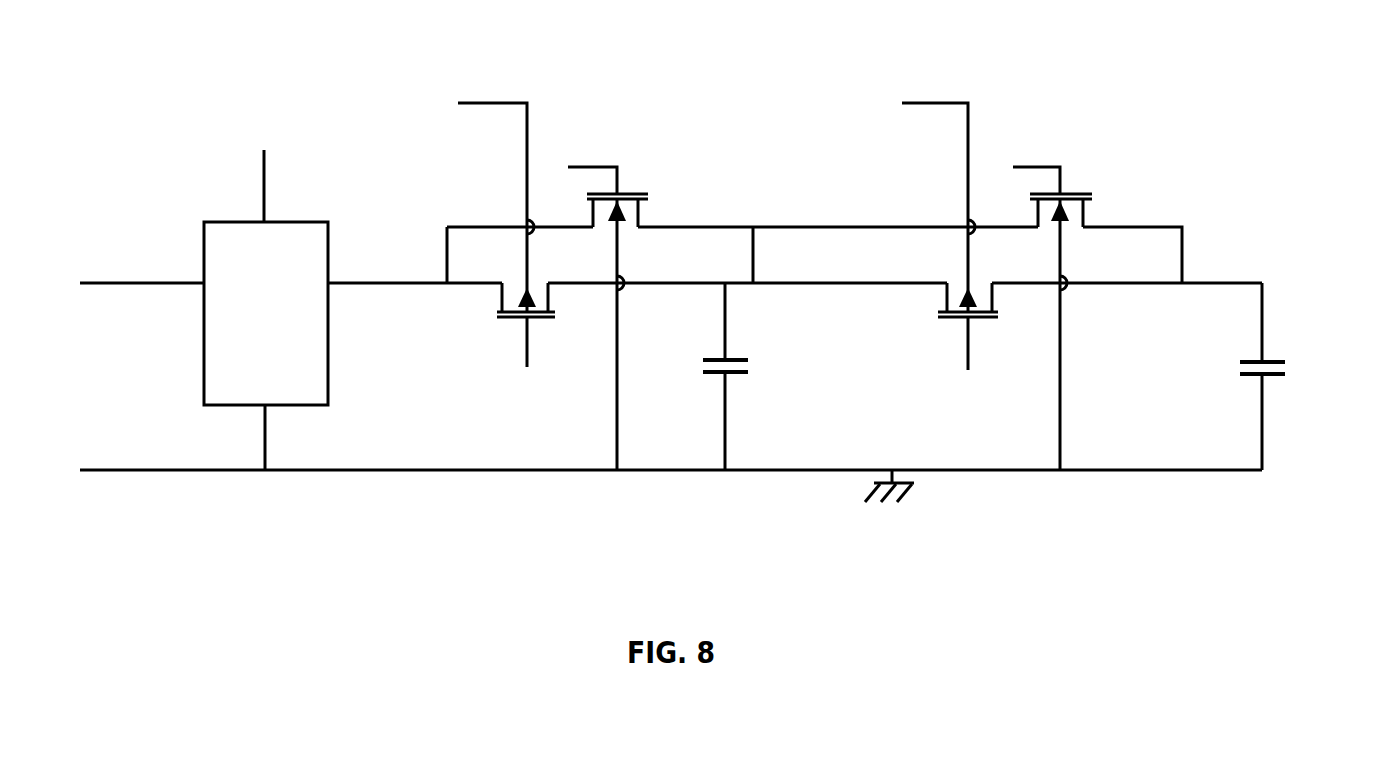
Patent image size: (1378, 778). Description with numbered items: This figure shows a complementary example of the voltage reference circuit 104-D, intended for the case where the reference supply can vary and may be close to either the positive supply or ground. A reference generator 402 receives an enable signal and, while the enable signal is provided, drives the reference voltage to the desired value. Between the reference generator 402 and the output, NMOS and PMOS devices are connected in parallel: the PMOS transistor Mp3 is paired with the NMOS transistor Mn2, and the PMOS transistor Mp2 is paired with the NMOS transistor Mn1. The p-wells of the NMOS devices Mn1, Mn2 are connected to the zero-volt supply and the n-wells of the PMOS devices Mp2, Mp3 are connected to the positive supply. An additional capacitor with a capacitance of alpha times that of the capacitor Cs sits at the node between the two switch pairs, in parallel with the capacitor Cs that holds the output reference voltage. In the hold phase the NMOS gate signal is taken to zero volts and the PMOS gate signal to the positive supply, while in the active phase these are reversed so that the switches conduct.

The voltage reference circuit 104-D is at (228, 53).
The reference generator 402 is at (266, 313).
The NMOS transistor Mn1 is at (1093, 318).
The NMOS transistor Mn2 is at (647, 318).
The PMOS transistor Mp2 is at (919, 326).
The PMOS transistor Mp3 is at (482, 325).
The capacitor Cs is at (1301, 376).